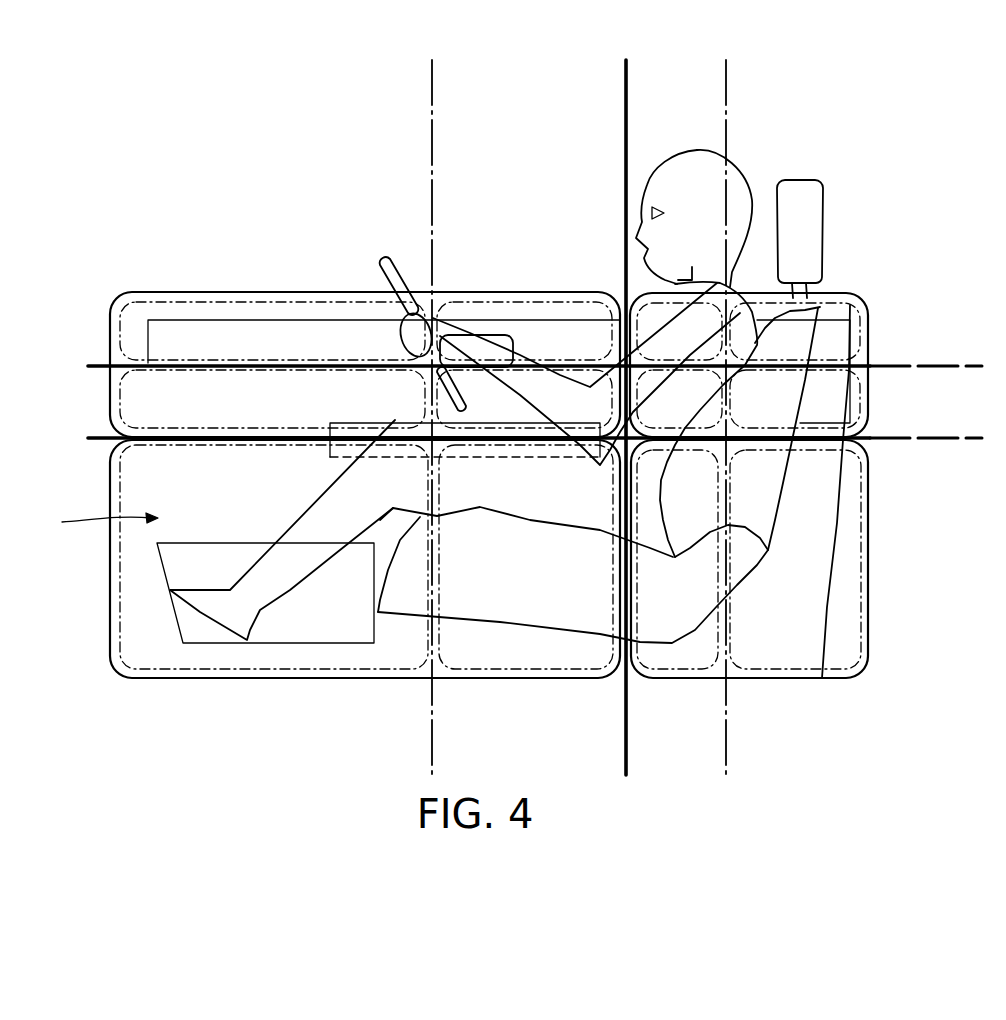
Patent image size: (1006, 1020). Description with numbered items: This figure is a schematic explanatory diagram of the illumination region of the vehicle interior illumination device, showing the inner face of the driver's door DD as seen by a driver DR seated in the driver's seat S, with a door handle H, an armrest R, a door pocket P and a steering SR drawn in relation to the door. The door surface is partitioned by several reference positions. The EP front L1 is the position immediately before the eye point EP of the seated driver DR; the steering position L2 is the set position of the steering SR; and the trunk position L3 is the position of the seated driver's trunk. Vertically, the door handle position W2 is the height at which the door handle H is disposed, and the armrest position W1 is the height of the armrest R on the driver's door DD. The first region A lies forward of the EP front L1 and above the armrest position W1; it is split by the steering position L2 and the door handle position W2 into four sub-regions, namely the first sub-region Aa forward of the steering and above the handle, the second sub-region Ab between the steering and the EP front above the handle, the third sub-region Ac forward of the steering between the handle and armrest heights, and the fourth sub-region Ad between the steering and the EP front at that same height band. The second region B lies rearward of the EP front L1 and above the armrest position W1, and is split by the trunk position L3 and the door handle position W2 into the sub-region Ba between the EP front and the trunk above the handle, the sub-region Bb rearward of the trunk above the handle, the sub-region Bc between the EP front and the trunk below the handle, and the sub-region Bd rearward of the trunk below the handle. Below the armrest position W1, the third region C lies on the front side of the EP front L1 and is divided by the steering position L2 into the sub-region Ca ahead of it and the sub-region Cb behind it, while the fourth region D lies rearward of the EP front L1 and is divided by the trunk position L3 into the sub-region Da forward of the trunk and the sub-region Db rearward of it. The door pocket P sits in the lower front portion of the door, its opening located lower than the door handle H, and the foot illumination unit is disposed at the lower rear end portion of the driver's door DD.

The first region A is at (150, 300).
The 1-1 region Aa is at (273, 336).
The 1-2 region Ab is at (567, 333).
The 1-3 region Ac is at (195, 400).
The 1-4 region Ad is at (483, 413).
The second region B is at (853, 297).
The 2-1 region Ba is at (653, 308).
The 2-2 region Bb is at (853, 333).
The 2-3 region Bc is at (703, 417).
The 2-4 region Bd is at (852, 401).
The third region C is at (105, 640).
The 3-1 region Ca is at (157, 636).
The 3-2 region Cb is at (520, 643).
The fourth region D is at (856, 680).
The 4-1 region Da is at (683, 652).
The 4-2 region Db is at (797, 625).
The driver's door DD is at (91, 520).
The driver DR is at (740, 160).
The eye point EP is at (654, 212).
The door handle H is at (469, 331).
The EP front L1 is at (625, 403).
The steering position L2 is at (431, 403).
The trunk position L3 is at (725, 403).
The door pocket P is at (300, 633).
The armrest R is at (340, 450).
The driver's seat S is at (775, 487).
The steering SR is at (385, 265).
The armrest position W1 is at (513, 439).
The door handle position W2 is at (513, 366).